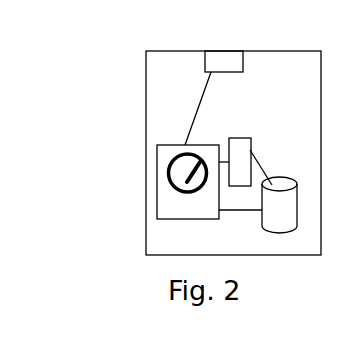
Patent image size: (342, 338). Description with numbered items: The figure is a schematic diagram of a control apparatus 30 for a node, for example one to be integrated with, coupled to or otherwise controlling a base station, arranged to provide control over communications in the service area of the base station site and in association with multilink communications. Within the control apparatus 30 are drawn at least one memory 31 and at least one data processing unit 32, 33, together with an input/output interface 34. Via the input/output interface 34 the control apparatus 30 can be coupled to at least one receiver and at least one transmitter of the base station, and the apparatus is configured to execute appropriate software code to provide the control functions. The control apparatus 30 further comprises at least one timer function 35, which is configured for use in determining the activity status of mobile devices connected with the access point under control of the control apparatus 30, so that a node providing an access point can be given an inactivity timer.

The control apparatus 30 is at (132, 45).
The memory 31 is at (280, 224).
The data processing unit 32 is at (157, 194).
The data processing unit 33 is at (235, 153).
The input/output interface 34 is at (228, 65).
The timer function 35 is at (168, 173).